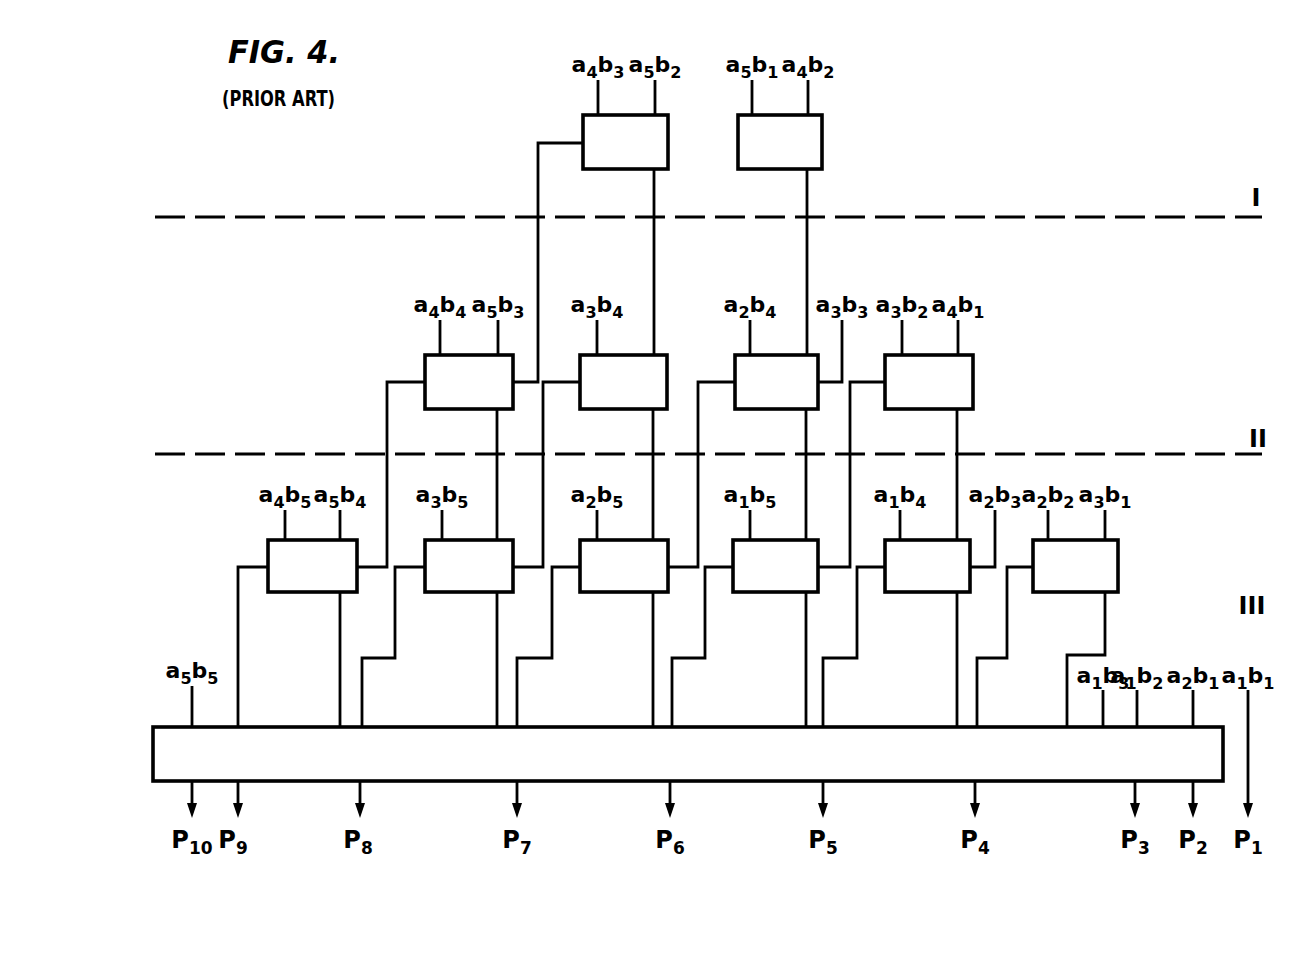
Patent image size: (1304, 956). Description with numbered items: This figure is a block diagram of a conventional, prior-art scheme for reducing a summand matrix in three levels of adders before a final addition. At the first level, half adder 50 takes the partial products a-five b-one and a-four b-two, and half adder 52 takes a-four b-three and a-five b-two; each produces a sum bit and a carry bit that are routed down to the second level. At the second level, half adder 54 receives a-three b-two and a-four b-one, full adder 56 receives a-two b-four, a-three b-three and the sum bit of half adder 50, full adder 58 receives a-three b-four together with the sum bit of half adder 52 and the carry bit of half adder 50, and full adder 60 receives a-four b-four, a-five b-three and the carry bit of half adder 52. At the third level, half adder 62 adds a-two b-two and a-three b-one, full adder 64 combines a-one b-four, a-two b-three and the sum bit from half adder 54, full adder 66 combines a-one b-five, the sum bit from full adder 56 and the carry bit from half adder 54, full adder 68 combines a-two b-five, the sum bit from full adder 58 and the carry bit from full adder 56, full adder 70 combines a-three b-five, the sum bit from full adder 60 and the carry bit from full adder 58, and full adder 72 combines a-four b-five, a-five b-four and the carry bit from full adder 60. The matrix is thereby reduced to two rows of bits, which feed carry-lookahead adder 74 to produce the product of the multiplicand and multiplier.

The half adder 50 is at (822, 153).
The half adder 52 is at (668, 140).
The half adder 54 is at (973, 388).
The full adder 56 is at (783, 409).
The full adder 58 is at (667, 371).
The full adder 60 is at (425, 363).
The half adder 62 is at (1118, 556).
The full adder 64 is at (935, 592).
The full adder 66 is at (755, 592).
The full adder 68 is at (594, 592).
The full adder 70 is at (445, 592).
The full adder 72 is at (290, 592).
The carry-lookahead adder 74 is at (153, 750).